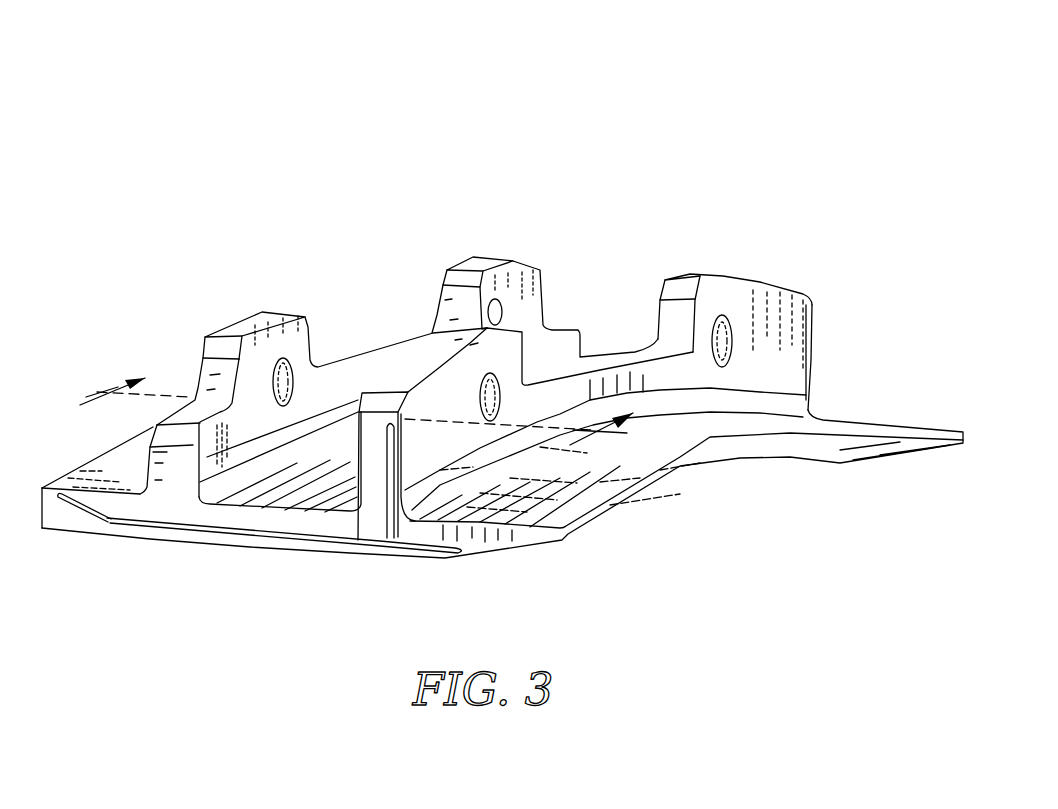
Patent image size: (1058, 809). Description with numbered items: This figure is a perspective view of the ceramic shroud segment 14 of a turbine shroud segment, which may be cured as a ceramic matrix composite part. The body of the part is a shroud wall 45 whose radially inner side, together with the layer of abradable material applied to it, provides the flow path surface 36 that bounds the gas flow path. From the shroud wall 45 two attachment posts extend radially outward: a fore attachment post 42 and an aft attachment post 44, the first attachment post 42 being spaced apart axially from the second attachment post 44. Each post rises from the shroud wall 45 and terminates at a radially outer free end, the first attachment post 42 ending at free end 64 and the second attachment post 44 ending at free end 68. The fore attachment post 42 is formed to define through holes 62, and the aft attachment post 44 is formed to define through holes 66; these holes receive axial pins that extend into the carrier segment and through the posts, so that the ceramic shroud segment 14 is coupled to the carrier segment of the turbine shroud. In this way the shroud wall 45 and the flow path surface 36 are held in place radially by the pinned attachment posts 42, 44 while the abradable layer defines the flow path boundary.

The ceramic shroud segment 14 is at (502, 356).
The flow path surface 36 is at (807, 452).
The fore attachment post 42 is at (312, 359).
The aft attachment post 44 is at (612, 362).
The shroud wall 45 is at (300, 485).
The through holes 62 is at (292, 380).
The free end 64 is at (248, 306).
The through holes 66 is at (500, 400).
The free end 68 is at (691, 270).